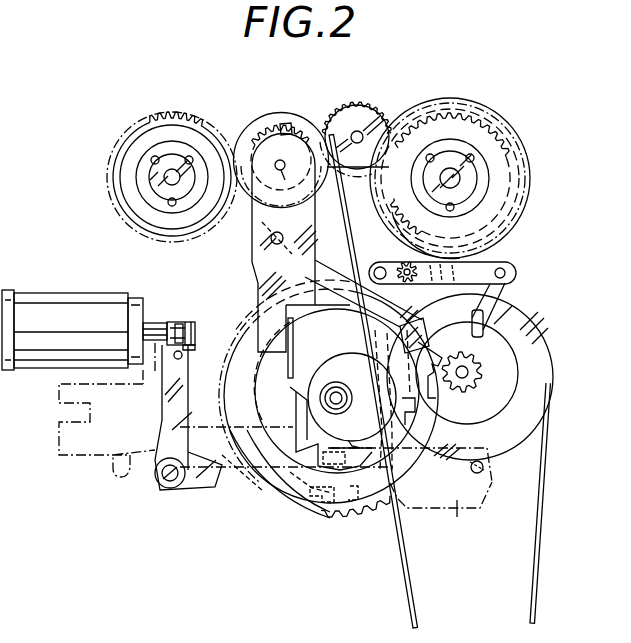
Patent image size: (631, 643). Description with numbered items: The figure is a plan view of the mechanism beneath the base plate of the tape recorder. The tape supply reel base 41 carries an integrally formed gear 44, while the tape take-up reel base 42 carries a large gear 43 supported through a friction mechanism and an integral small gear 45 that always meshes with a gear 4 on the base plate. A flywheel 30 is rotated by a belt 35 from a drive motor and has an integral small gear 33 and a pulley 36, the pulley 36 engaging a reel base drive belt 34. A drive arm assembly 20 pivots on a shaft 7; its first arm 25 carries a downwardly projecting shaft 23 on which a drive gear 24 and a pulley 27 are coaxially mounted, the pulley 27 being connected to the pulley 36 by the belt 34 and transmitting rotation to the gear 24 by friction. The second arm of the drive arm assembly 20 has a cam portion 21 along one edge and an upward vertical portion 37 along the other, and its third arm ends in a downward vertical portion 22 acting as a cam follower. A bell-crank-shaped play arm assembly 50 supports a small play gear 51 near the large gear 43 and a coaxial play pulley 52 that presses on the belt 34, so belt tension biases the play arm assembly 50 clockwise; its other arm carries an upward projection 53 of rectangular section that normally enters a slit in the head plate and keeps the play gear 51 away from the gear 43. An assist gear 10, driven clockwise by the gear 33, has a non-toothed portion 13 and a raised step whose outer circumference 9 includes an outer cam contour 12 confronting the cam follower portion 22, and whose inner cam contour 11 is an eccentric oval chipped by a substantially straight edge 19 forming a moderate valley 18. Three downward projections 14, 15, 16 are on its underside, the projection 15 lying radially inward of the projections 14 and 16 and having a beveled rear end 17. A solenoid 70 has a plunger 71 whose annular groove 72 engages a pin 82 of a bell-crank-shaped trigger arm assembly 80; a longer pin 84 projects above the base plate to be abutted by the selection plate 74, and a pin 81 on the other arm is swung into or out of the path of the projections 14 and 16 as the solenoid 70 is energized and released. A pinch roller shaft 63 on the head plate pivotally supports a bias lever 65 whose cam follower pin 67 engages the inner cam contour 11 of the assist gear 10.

The gear 4 is at (352, 104).
The shaft 7 is at (270, 240).
The outer circumference 9 is at (228, 408).
The assist gear 10 is at (376, 510).
The inner cam contour 11 is at (340, 360).
The outer cam contour 12 is at (460, 396).
The non-toothed portion 13 is at (445, 452).
The projection 14 is at (331, 503).
The projection 15 is at (300, 486).
The projection 16 is at (222, 494).
The rear end 17 is at (357, 502).
The moderate valley 18 is at (318, 414).
The straight edge 19 is at (359, 429).
The drive arm assembly 20 is at (260, 263).
The cam portion 21 is at (252, 326).
The downward vertical portion 22 is at (360, 333).
The shaft 23 is at (283, 180).
The drive gear 24 is at (258, 137).
The first arm 25 is at (293, 148).
The pulley 27 is at (249, 135).
The flywheel 30 is at (550, 360).
The small gear 33 is at (474, 374).
The reel base drive belt 34 is at (358, 276).
The belt 35 is at (539, 572).
The pulley 36 is at (518, 386).
The upward vertical portion 37 is at (294, 350).
The tape supply reel base 41 is at (152, 185).
The tape take-up reel base 42 is at (463, 192).
The large gear 43 is at (470, 108).
The gear 44 is at (118, 140).
The small gear 45 is at (507, 128).
The play arm assembly 50 is at (512, 274).
The play gear 51 is at (399, 268).
The play pulley 52 is at (377, 227).
The upward projection 53 is at (486, 327).
The pinch roller shaft 63 is at (480, 474).
The bias lever 65 is at (457, 518).
The cam follower pin 67 is at (349, 456).
The solenoid 70 is at (37, 316).
The plunger 71 is at (191, 322).
The annular groove 72 is at (194, 346).
The selection plate 74 is at (79, 455).
The trigger arm assembly 80 is at (156, 483).
The pin 81 is at (299, 516).
The pin 82 is at (176, 322).
The pin 84 is at (182, 357).